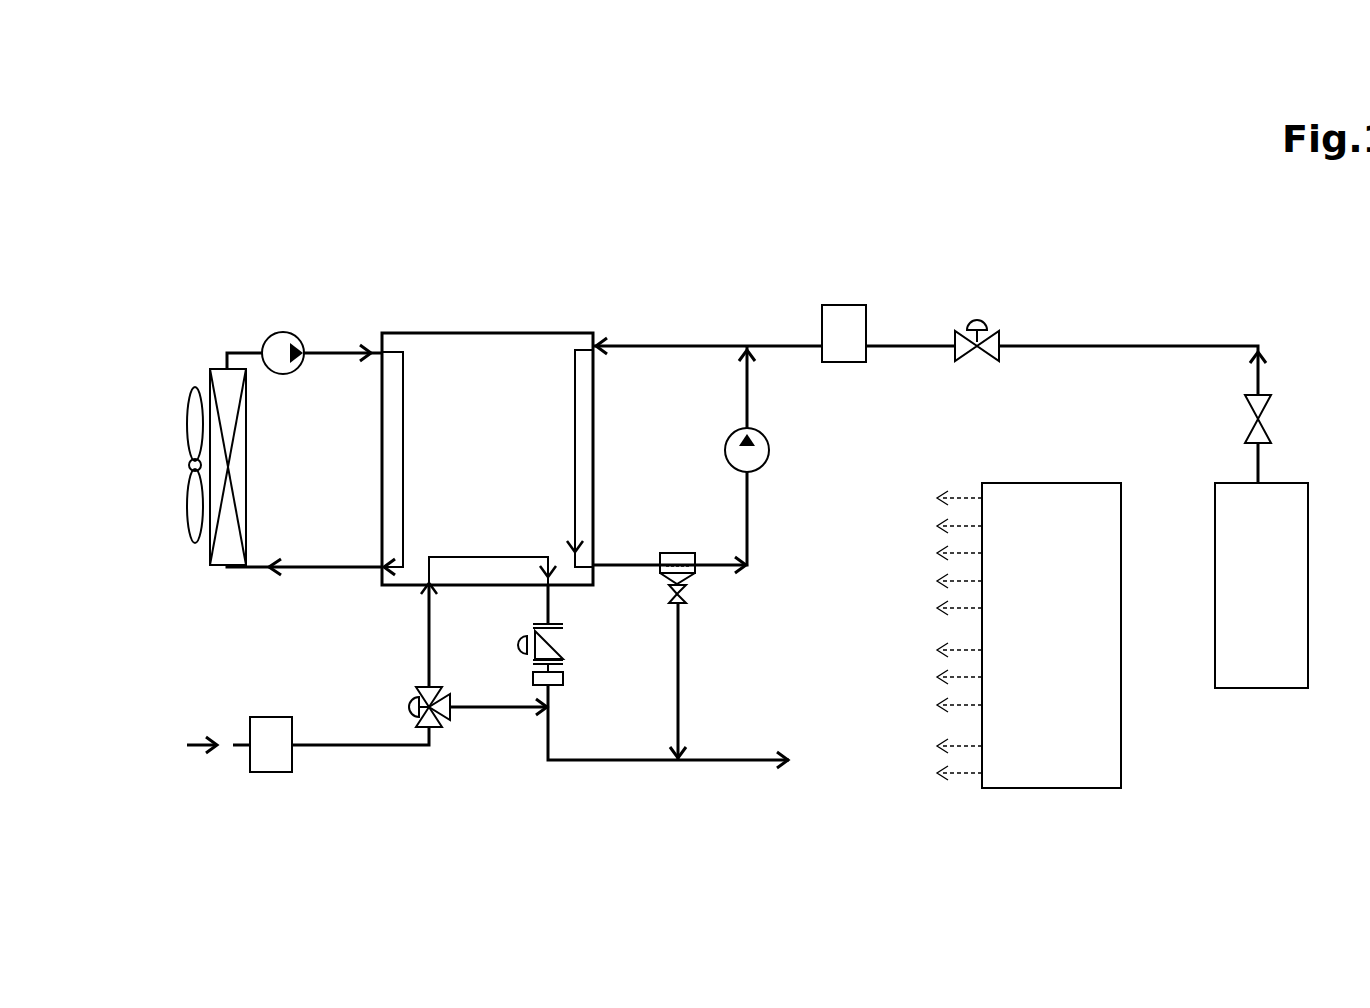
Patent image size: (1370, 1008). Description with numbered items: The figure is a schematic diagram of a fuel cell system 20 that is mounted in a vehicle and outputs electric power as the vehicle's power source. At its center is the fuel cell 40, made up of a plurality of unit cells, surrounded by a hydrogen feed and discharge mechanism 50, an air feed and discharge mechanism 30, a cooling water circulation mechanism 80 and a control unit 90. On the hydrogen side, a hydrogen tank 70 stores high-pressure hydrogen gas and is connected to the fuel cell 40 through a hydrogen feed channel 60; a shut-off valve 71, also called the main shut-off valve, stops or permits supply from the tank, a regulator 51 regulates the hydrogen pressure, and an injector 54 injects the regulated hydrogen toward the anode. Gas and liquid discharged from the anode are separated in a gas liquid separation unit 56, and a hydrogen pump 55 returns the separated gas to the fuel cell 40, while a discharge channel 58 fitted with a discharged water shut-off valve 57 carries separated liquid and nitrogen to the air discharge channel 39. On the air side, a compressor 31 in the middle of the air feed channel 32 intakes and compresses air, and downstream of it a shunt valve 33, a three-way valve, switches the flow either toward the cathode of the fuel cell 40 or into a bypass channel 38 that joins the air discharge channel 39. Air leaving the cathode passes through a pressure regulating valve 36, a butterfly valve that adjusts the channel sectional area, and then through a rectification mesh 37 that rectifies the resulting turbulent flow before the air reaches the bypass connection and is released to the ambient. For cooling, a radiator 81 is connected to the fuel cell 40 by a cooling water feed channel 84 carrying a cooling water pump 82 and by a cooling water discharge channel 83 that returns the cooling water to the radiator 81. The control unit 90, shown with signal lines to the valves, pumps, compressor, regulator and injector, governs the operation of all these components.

The fuel cell system 20 is at (1273, 250).
The air feed and discharge mechanism 30 is at (322, 655).
The compressor 31 is at (265, 717).
The air feed channel 32 is at (352, 747).
The shunt valve 33 is at (437, 729).
The pressure regulating valve 36 is at (538, 632).
The rectification mesh 37 is at (565, 681).
The bypass channel 38 is at (491, 712).
The air discharge channel 39 is at (606, 762).
The fuel cell 40 is at (573, 333).
The hydrogen feed and discharge mechanism 50 is at (1197, 330).
The regulator 51 is at (1000, 334).
The injector 54 is at (838, 305).
The hydrogen pump 55 is at (770, 452).
The gas liquid separation unit 56 is at (692, 577).
The discharged water shut-off valve 57 is at (686, 600).
The discharge channel 58 is at (681, 691).
The hydrogen feed channel 60 is at (1178, 346).
The hydrogen tank 70 is at (1278, 483).
The shut-off valve 71 is at (1256, 421).
The cooling water circulation mechanism 80 is at (216, 326).
The radiator 81 is at (214, 371).
The cooling water pump 82 is at (283, 332).
The cooling water discharge channel 83 is at (314, 571).
The cooling water feed channel 84 is at (322, 352).
The control unit 90 is at (1078, 483).